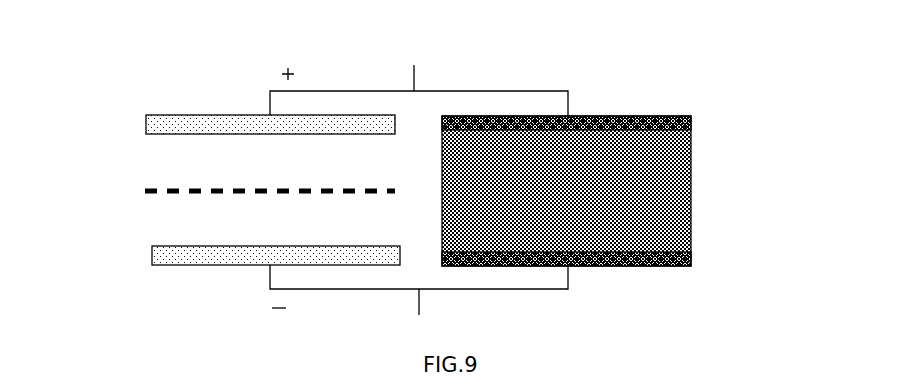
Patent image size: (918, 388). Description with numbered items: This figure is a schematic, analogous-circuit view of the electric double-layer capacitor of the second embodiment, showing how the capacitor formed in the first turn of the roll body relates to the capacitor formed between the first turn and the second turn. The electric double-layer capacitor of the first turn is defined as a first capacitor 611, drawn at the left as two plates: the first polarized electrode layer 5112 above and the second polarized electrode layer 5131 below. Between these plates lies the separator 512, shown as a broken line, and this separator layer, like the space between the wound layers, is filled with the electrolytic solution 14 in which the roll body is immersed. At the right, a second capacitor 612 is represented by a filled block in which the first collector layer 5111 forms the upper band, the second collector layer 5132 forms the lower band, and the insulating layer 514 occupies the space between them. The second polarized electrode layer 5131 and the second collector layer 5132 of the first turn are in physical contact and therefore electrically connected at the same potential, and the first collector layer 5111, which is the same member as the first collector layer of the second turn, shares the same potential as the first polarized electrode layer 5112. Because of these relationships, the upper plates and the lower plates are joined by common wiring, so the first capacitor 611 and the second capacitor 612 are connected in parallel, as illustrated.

The first capacitor 611 is at (219, 106).
The second capacitor 612 is at (621, 100).
The first polarized electrode layer 5112 is at (147, 126).
The second polarized electrode layer 5131 is at (151, 257).
The separator 512 is at (145, 191).
The electrolytic solution 14 is at (172, 166).
The insulating layer 514 is at (660, 178).
The first collector layer 5111 is at (690, 122).
The second collector layer 5132 is at (691, 258).